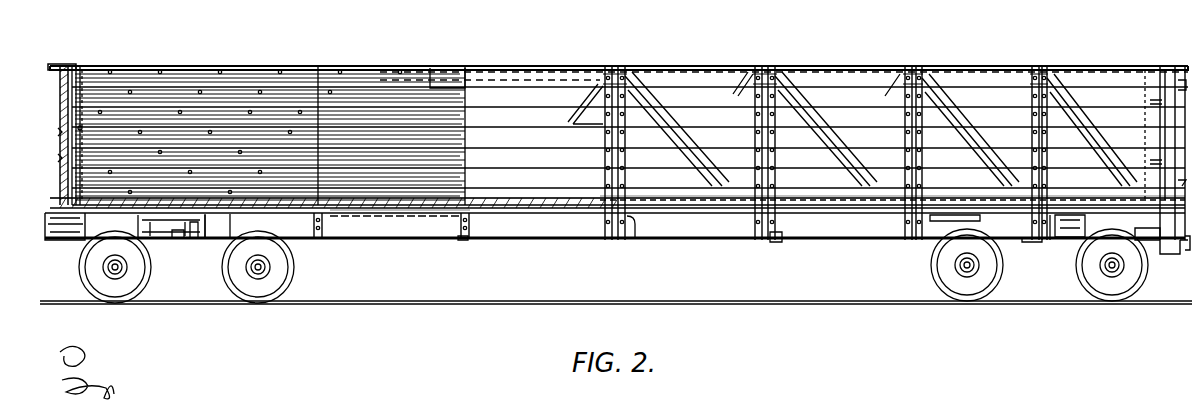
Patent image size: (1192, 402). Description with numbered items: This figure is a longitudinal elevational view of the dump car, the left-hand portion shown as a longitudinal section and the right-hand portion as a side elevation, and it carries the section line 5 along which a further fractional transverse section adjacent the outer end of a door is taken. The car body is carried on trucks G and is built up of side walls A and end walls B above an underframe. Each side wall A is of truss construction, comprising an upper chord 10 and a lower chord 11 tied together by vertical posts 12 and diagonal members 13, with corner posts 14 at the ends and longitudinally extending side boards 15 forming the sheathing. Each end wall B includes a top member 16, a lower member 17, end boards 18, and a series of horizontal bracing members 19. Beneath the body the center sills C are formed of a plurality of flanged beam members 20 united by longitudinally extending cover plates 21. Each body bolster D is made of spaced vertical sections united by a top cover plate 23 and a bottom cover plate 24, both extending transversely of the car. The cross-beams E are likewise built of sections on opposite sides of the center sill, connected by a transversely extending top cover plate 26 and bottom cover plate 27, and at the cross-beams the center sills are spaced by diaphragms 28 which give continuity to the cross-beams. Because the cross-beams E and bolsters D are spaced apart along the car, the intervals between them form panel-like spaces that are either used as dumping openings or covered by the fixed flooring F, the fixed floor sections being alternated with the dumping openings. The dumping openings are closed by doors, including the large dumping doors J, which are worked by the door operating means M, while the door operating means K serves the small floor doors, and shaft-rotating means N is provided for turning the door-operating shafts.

The upper chord 10 is at (806, 66).
The lower chord 11 is at (786, 202).
The vertical posts 12 is at (620, 158).
The diagonal members 13 is at (686, 142).
The corner posts 14 is at (82, 108).
The longitudinally extending side boards 15 is at (628, 154).
The top member 16 is at (70, 66).
The lower member 17 is at (60, 210).
The end boards 18 is at (80, 128).
The horizontal bracing members 19 is at (62, 158).
The flanged beam members 20 is at (230, 228).
The longitudinally extending cover plates 21 is at (215, 226).
The top cover plate 23 is at (190, 222).
The bottom cover plate 24 is at (186, 240).
The top cover plate 26 is at (456, 218).
The bottom cover plate 27 is at (462, 240).
The diaphragms 28 is at (322, 226).
The section line 5— 5 is at (1042, 269).
The side walls A is at (641, 151).
The end walls B is at (62, 110).
The center sills C is at (510, 238).
The body bolsters D is at (196, 240).
The cross-beams E is at (322, 240).
The fixed flooring F is at (250, 203).
The trucks G is at (238, 264).
The large dumping doors J is at (378, 202).
The door operating means K is at (938, 218).
The door operating means M is at (648, 238).
The shaft-rotating means N is at (782, 242).